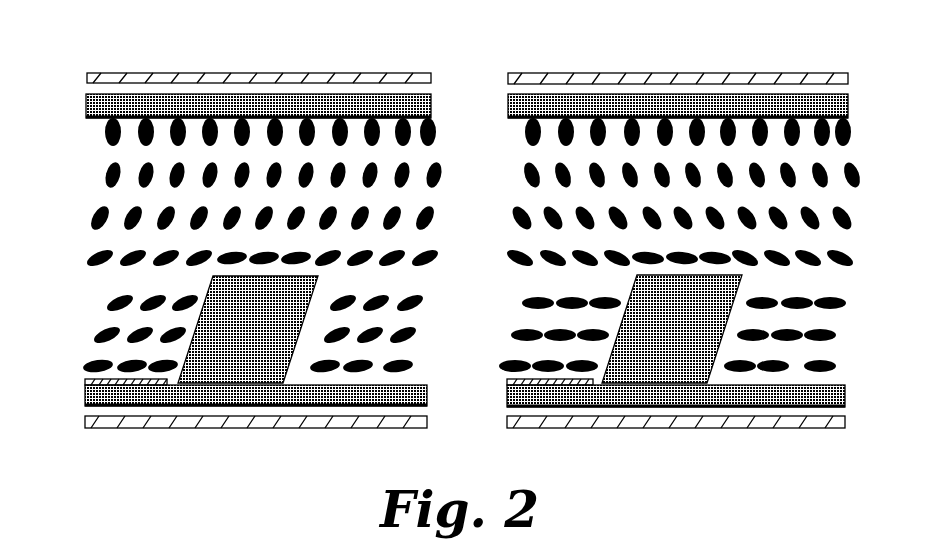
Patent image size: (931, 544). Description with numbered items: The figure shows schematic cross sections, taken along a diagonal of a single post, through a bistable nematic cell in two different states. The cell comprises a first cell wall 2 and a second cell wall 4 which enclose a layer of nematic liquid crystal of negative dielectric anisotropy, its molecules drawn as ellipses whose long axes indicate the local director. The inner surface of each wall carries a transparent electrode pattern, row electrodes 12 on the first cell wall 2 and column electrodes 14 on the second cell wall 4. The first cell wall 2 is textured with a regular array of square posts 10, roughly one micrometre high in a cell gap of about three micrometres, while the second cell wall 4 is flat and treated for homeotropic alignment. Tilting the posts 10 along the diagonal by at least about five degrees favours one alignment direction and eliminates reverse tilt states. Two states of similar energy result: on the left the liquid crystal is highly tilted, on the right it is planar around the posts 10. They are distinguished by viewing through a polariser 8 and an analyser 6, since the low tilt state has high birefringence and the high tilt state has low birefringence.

The first cell wall 2 is at (85, 394).
The second cell wall 4 is at (86, 106).
The analyser 6 is at (246, 422).
The polariser 8 is at (263, 77).
The square posts 10 is at (213, 280).
The row electrodes 12 is at (90, 381).
The column electrodes 14 is at (97, 122).